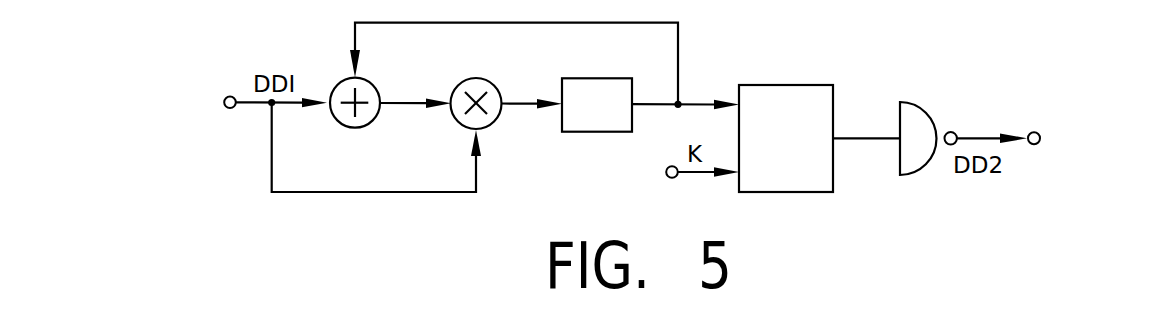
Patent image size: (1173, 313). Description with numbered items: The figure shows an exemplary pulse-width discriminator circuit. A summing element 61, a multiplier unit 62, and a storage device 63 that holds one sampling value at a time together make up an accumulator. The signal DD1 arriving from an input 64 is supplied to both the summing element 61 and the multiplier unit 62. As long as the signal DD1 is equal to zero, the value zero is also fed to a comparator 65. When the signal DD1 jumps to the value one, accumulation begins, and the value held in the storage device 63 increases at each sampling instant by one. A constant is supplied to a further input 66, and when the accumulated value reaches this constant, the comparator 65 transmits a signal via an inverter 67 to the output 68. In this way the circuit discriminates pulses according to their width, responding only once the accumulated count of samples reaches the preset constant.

The summing element 61 is at (367, 90).
The multiplier unit 62 is at (482, 86).
The storage device 63 is at (612, 78).
The input 64 is at (233, 108).
The comparator 65 is at (797, 92).
The input 66 is at (666, 178).
The inverter 67 is at (918, 118).
The output 68 is at (1032, 132).